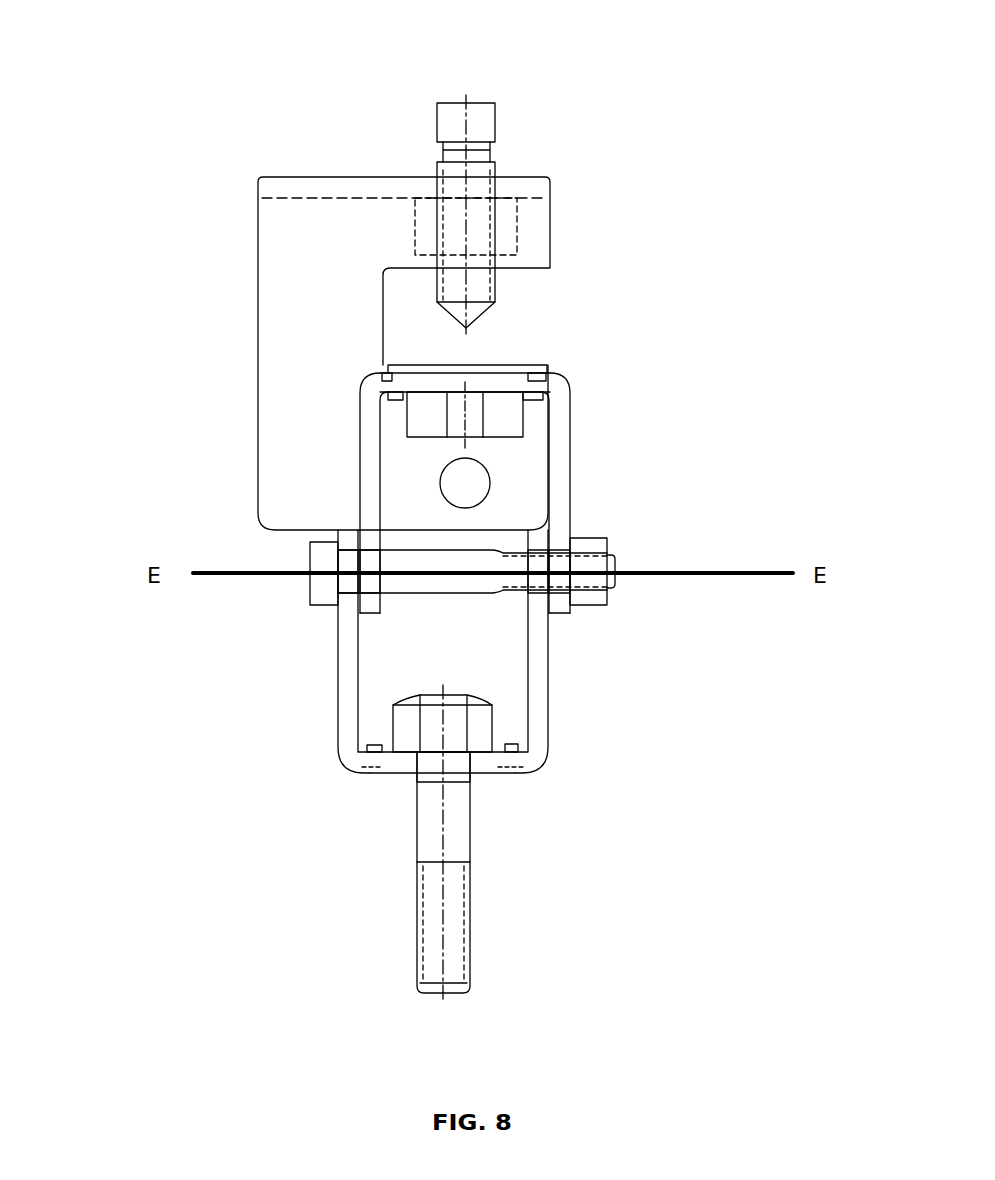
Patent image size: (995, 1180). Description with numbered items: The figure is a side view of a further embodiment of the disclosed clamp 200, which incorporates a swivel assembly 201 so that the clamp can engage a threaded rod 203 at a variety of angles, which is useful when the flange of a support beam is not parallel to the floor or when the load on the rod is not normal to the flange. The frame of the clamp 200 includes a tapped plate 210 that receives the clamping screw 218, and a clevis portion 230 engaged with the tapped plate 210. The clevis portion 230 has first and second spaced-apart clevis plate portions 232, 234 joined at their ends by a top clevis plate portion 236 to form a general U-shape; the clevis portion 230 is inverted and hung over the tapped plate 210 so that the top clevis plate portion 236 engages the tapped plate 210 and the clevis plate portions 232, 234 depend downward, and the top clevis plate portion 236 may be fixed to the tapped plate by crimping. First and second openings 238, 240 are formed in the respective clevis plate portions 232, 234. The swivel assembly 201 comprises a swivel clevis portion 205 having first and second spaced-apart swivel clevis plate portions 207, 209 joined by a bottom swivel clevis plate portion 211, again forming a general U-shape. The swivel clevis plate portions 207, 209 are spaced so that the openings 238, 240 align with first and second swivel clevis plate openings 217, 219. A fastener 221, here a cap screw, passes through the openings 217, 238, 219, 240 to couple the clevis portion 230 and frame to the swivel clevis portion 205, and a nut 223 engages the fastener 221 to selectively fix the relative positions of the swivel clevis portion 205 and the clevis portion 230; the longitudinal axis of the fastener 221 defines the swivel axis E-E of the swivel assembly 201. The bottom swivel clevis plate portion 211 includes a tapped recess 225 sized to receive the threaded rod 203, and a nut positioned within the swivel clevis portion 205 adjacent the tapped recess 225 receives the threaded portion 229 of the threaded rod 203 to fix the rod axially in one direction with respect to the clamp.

The clamp 200 is at (690, 173).
The swivel assembly 201 is at (401, 700).
The threaded rod 203 is at (428, 843).
The swivel clevis portion 205 is at (487, 844).
The first swivel clevis plate portion 207 is at (348, 690).
The second swivel clevis plate portion 209 is at (540, 710).
The bottom swivel clevis plate portion 211 is at (390, 770).
The tapped plate 210 is at (428, 415).
The first swivel clevis plate opening 217 is at (345, 598).
The clamping screw 218 is at (474, 117).
The second swivel clevis plate opening 219 is at (540, 598).
The fastener 221 is at (322, 556).
The nut 223 is at (590, 558).
The tapped recess 225 is at (470, 757).
The threaded portion 229 is at (467, 763).
The clevis portion 230 is at (561, 425).
The first clevis plate portion 232 is at (367, 432).
The second clevis plate portion 234 is at (565, 432).
The top clevis plate portion 236 is at (500, 380).
The first opening 238 is at (370, 548).
The second opening 240 is at (565, 548).